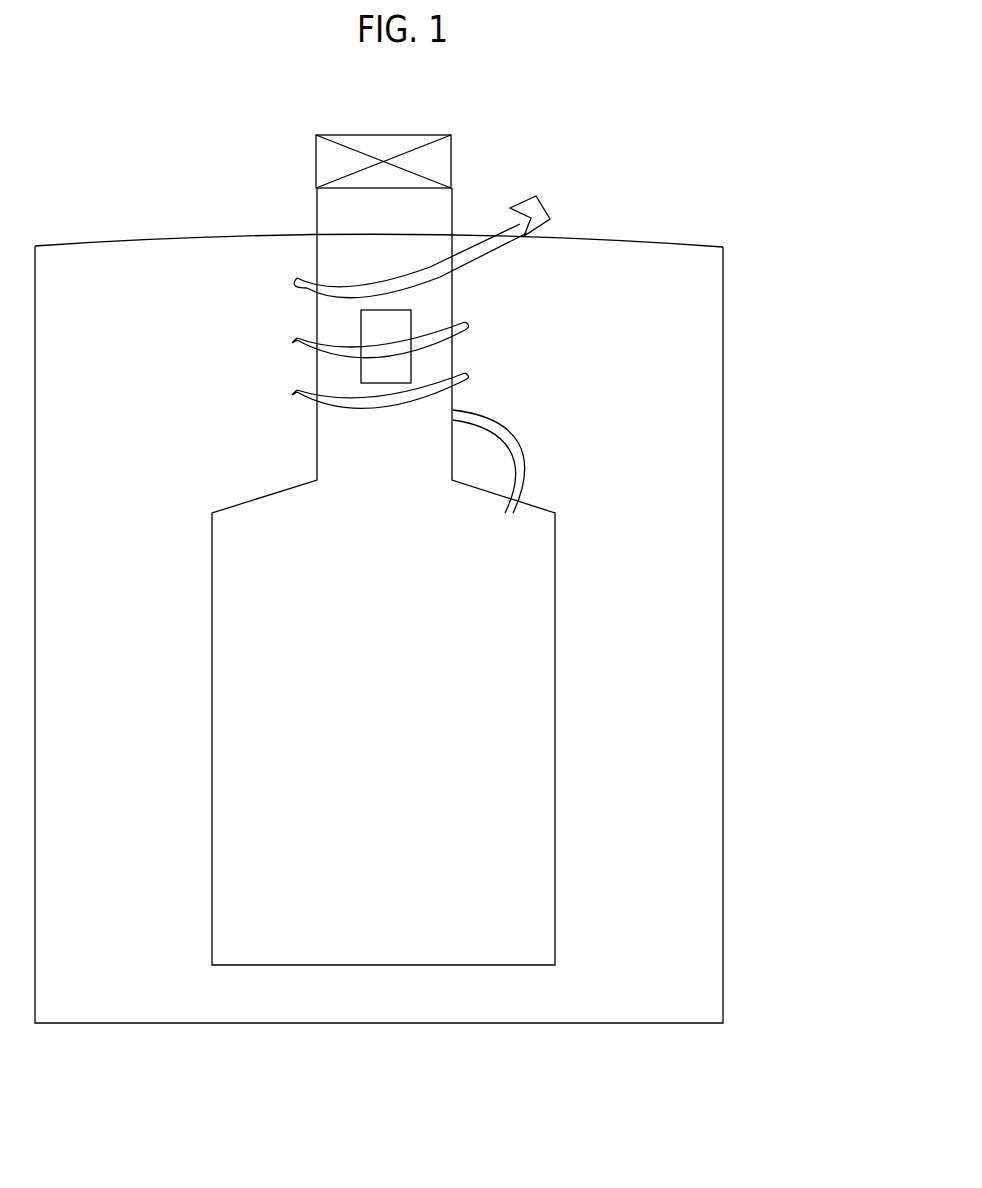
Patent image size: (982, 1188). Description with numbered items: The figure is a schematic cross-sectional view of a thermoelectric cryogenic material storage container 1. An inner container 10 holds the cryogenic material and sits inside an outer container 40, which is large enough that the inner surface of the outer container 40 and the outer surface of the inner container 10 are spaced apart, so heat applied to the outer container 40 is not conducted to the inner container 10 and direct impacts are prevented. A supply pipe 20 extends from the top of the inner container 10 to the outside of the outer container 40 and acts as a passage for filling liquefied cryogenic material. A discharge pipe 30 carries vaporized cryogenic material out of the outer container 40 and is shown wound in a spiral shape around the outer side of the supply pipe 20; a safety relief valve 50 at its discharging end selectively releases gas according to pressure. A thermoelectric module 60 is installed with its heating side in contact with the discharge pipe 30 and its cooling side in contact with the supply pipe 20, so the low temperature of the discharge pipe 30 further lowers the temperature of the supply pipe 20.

The thermoelectric cryogenic material storage container 1 is at (684, 130).
The inner container 10 is at (555, 577).
The supply pipe 20 is at (453, 393).
The discharge pipe 30 is at (510, 432).
The outer container 40 is at (723, 360).
The safety relief valve 50 is at (533, 197).
The thermoelectric module 60 is at (411, 350).